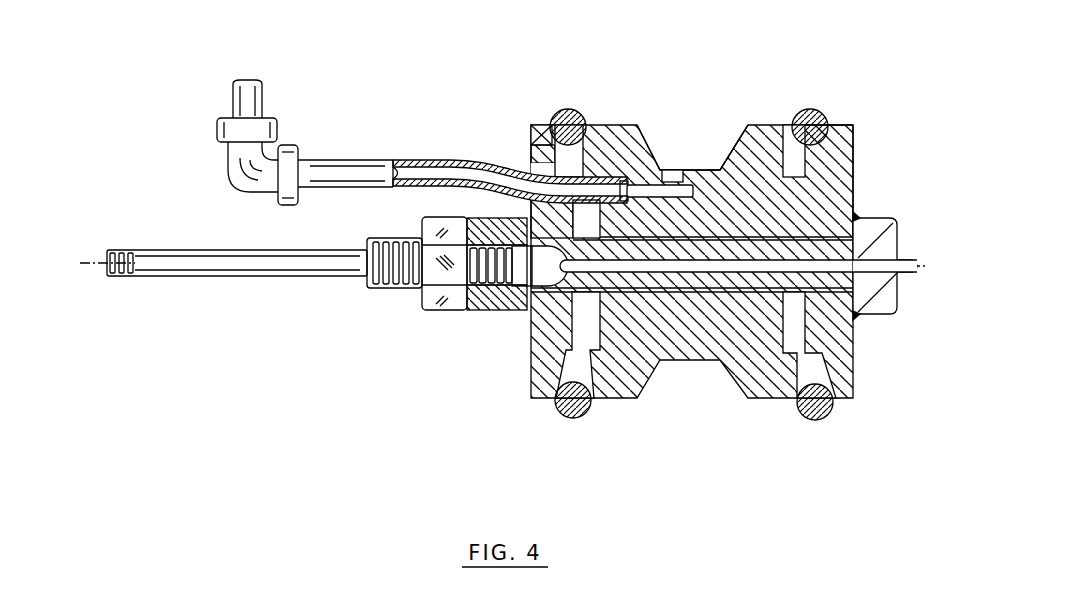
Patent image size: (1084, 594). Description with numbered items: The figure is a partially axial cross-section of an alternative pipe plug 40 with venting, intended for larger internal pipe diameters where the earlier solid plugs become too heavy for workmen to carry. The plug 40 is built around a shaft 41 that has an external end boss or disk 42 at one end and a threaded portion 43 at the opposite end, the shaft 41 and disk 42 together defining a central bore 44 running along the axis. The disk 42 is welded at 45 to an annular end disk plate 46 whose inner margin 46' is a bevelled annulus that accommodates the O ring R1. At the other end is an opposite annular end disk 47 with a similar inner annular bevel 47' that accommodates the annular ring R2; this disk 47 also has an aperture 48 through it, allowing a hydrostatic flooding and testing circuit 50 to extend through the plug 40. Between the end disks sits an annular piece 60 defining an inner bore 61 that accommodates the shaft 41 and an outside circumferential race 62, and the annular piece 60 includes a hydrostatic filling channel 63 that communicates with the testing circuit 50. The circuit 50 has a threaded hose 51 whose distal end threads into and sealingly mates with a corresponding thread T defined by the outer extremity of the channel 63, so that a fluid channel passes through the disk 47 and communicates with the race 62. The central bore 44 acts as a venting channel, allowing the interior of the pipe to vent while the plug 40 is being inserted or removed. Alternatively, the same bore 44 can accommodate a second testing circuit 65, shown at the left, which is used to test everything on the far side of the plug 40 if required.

The plug 40 is at (480, 334).
The shaft 41 is at (708, 200).
The external end boss or disk 42 is at (880, 243).
The threaded portion 43 is at (382, 290).
The central bore 44 is at (653, 268).
The weld 45 is at (860, 215).
The annular end disk plate 46 is at (870, 261).
The inner margin 46' is at (830, 98).
The opposite annular end disk 47 is at (529, 148).
The inner annular bevel 47' is at (537, 98).
The aperture 48 is at (505, 165).
The hydrostatic flooding and testing circuit 50 is at (349, 152).
The threaded hose 51 is at (350, 182).
The annular piece 60 is at (780, 140).
The inner bore 61 is at (700, 305).
The outside circumferential race 62 is at (735, 148).
The hydrostatic filling channel 63 is at (676, 170).
The second testing circuit 65 is at (198, 281).
The thread T is at (618, 175).
The O ring R1 is at (832, 420).
The annular ring R2 is at (570, 420).